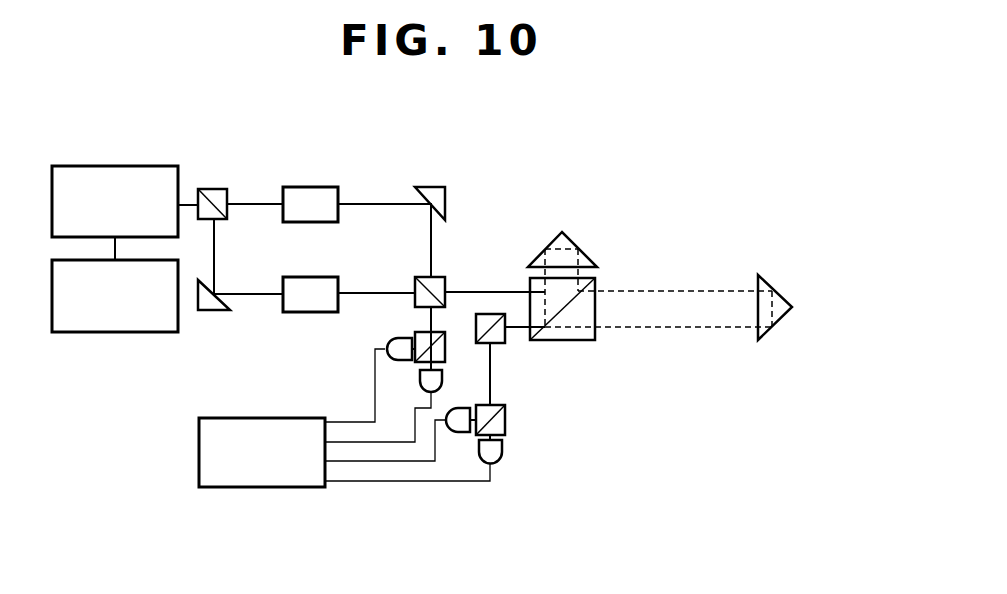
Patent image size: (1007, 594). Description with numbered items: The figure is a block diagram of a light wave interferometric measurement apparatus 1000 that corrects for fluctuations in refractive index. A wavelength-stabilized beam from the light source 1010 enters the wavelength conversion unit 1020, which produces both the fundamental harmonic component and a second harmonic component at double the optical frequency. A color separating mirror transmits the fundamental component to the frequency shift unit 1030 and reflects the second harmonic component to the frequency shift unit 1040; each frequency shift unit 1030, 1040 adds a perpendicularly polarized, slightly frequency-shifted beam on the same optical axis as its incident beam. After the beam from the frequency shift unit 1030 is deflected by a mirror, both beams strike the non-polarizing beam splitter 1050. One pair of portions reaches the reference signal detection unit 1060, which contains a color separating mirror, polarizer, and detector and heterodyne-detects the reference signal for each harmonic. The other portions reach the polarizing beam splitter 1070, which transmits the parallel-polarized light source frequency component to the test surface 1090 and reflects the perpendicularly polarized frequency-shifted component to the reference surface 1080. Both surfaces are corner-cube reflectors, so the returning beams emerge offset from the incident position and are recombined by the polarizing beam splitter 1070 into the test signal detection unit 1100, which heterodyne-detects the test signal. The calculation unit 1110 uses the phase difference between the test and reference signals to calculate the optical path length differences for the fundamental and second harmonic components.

The measurement apparatus 1000 is at (582, 152).
The light source 1010 is at (123, 332).
The wavelength conversion unit 1020 is at (123, 166).
The frequency shift unit 1030 is at (323, 187).
The frequency shift unit 1040 is at (323, 277).
The non-polarizing beam splitter 1050 is at (437, 277).
The reference signal detection unit 1060 is at (415, 332).
The polarizing beam splitter 1070 is at (582, 340).
The reference surface 1080 is at (584, 215).
The test surface 1090 is at (762, 275).
The test signal detection unit 1100 is at (505, 420).
The calculation unit 1110 is at (270, 487).